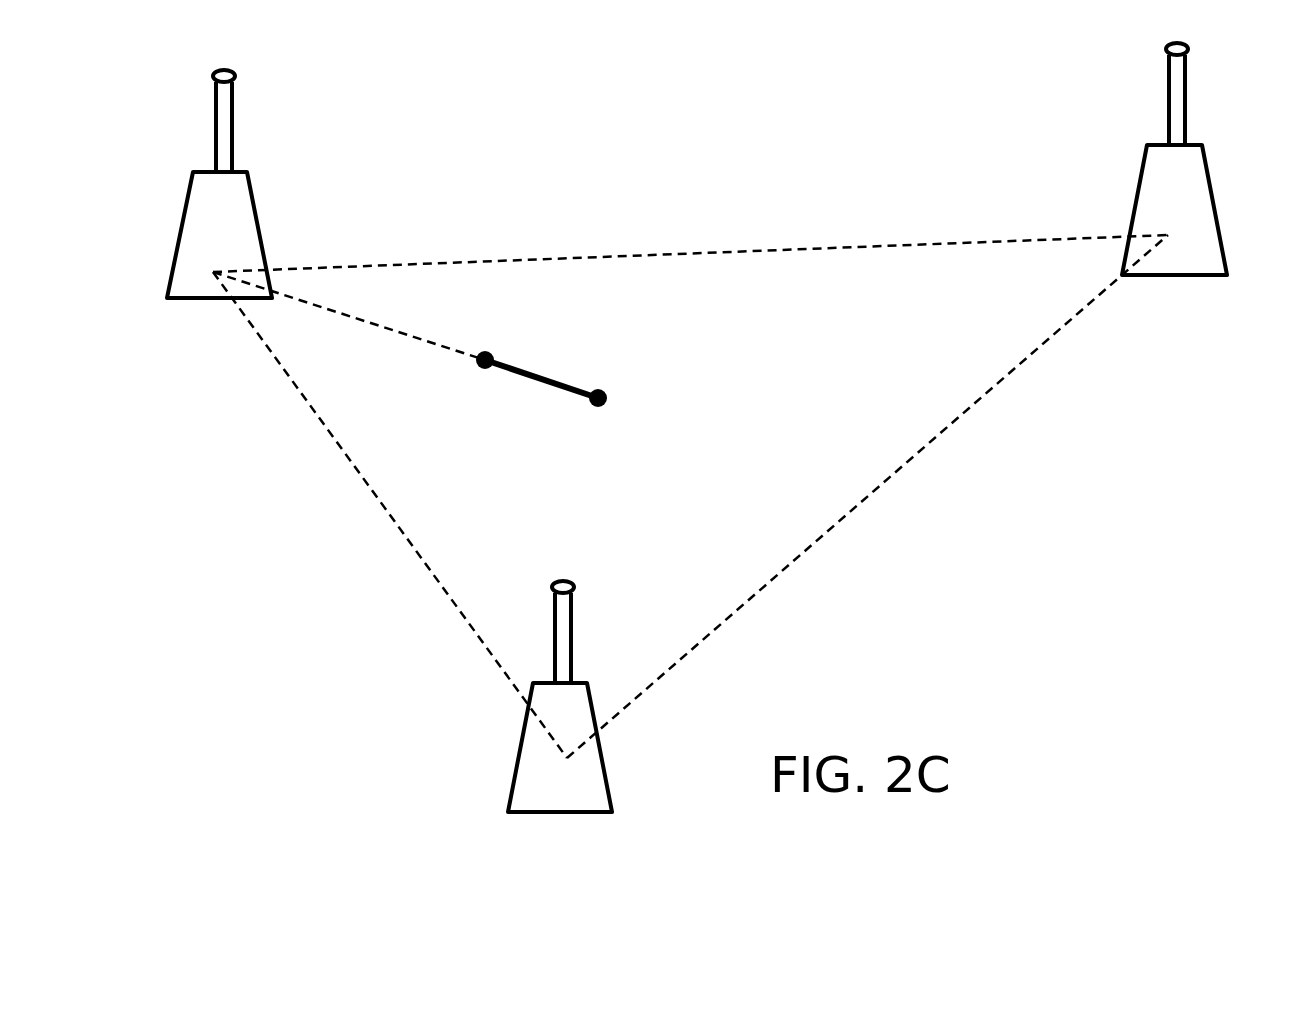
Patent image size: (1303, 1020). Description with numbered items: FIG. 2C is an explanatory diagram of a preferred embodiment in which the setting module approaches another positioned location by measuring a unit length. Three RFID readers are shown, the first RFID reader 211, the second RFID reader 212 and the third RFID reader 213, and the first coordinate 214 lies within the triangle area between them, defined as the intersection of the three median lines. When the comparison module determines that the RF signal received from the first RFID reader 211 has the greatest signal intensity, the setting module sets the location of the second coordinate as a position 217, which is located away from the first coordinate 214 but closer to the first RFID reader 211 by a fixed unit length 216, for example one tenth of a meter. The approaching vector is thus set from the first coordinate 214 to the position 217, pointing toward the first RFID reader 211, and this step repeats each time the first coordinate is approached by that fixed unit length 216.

The first RFID reader 211 is at (152, 266).
The second RFID reader 212 is at (501, 780).
The third RFID reader 213 is at (1299, 236).
The first coordinate 214 is at (601, 407).
The fixed unit length 216 is at (487, 355).
The position 217 is at (485, 369).